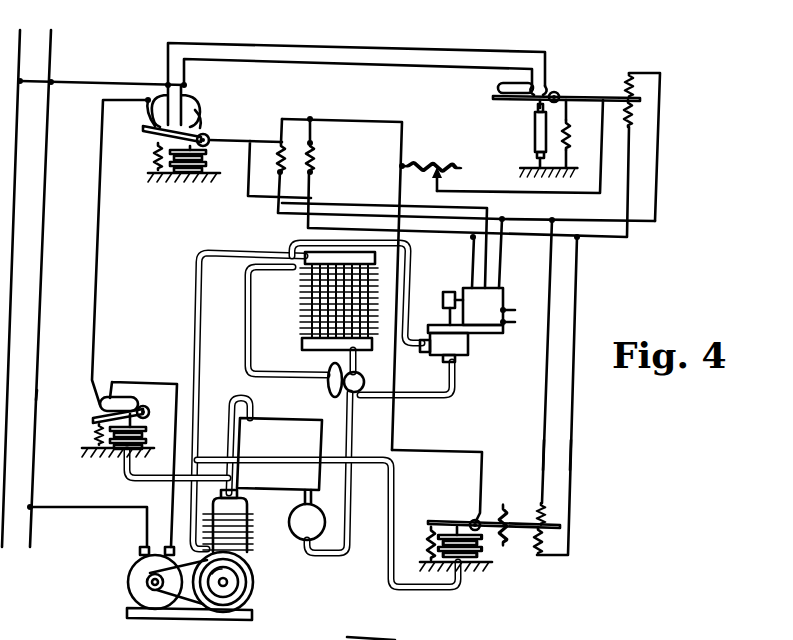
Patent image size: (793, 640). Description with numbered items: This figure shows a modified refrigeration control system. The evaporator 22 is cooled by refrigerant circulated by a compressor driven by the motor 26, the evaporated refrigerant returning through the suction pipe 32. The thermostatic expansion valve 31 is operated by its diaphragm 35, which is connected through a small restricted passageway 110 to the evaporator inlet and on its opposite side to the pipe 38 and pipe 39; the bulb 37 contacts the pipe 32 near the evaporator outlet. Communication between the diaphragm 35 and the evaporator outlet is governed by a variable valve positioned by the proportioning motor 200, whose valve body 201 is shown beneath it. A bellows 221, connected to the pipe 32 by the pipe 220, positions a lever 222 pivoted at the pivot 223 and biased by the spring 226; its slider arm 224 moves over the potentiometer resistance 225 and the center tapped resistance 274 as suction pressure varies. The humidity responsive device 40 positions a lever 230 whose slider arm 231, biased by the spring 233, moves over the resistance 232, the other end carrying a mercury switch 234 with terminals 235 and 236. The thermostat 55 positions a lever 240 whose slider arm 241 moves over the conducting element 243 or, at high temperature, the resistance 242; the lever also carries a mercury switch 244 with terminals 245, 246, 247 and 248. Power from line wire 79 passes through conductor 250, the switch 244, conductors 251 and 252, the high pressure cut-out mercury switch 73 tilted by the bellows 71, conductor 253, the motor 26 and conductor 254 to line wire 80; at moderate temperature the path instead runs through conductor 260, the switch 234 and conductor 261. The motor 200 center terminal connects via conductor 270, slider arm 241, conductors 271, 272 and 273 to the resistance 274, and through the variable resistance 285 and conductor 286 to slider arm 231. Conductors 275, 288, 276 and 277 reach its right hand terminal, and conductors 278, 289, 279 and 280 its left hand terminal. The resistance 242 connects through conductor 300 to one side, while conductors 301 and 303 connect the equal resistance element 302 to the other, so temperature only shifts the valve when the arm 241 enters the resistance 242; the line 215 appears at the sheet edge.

The line wire 79 is at (22, 47).
The conductor 250 is at (100, 80).
The conductor 251 is at (172, 47).
The conductor 261 is at (342, 53).
The conductor 260 is at (340, 68).
The terminal 246 is at (160, 88).
The terminal 247 is at (197, 97).
The terminal 248 is at (205, 120).
The terminal 245 is at (150, 114).
The mercury switch 244 is at (145, 126).
The lever 240 is at (226, 139).
The slider arm 241 is at (268, 140).
The conductor 271 is at (290, 120).
The conductor 272 is at (347, 122).
The conducting element 243 is at (297, 152).
The conductor 301 is at (330, 149).
The resistance element 302 is at (311, 158).
The potentiometer resistance 242 is at (278, 168).
The conductor 300 is at (289, 209).
The conductor 303 is at (364, 231).
The conductor 270 is at (352, 204).
The variable resistance 285 is at (431, 165).
The terminal 235 is at (531, 62).
The terminal 236 is at (556, 88).
The mercury switch 234 is at (498, 90).
The lever 230 is at (561, 106).
The slider arm 231 is at (631, 74).
The potentiometer resistance 232 is at (630, 110).
The spring 233 is at (568, 133).
The humidity responsive device 40 is at (528, 126).
The conductor 288 is at (657, 185).
The conductor 286 is at (566, 195).
The conductor 276 is at (517, 219).
The conductor 280 is at (472, 272).
The conductor 277 is at (500, 258).
The conductor 279 is at (558, 243).
The conductor 289 is at (582, 240).
The thermostat 55 is at (183, 140).
The conductor 252 is at (94, 265).
The bulb 37 is at (283, 270).
The evaporator 22 is at (308, 300).
The pipe 39 is at (417, 303).
The proportioning motor 200 is at (505, 297).
The valve body 201 is at (460, 347).
The restricted passageway 110 is at (340, 363).
The expansion valve 31 is at (363, 380).
The pipe 38 is at (455, 382).
The diaphragm 35 is at (330, 393).
The line wire 80 is at (39, 392).
The mercury switch 73 is at (97, 406).
The bellows 71 is at (140, 434).
The conductor 253 is at (138, 383).
The pipe 32 is at (197, 397).
The conductor 273 is at (406, 450).
The conductor 275 is at (542, 433).
The conductor 278 is at (570, 437).
The conductor 254 is at (73, 507).
The motor 26 is at (130, 586).
The lever 222 is at (438, 522).
The pivot 223 is at (477, 521).
The center tapped resistance 274 is at (506, 516).
The potentiometer resistance 225 is at (544, 520).
The spring 226 is at (432, 541).
The bellows 221 is at (482, 550).
The slider arm 224 is at (524, 533).
The pipe 220 is at (405, 590).
The line 215 is at (356, 636).